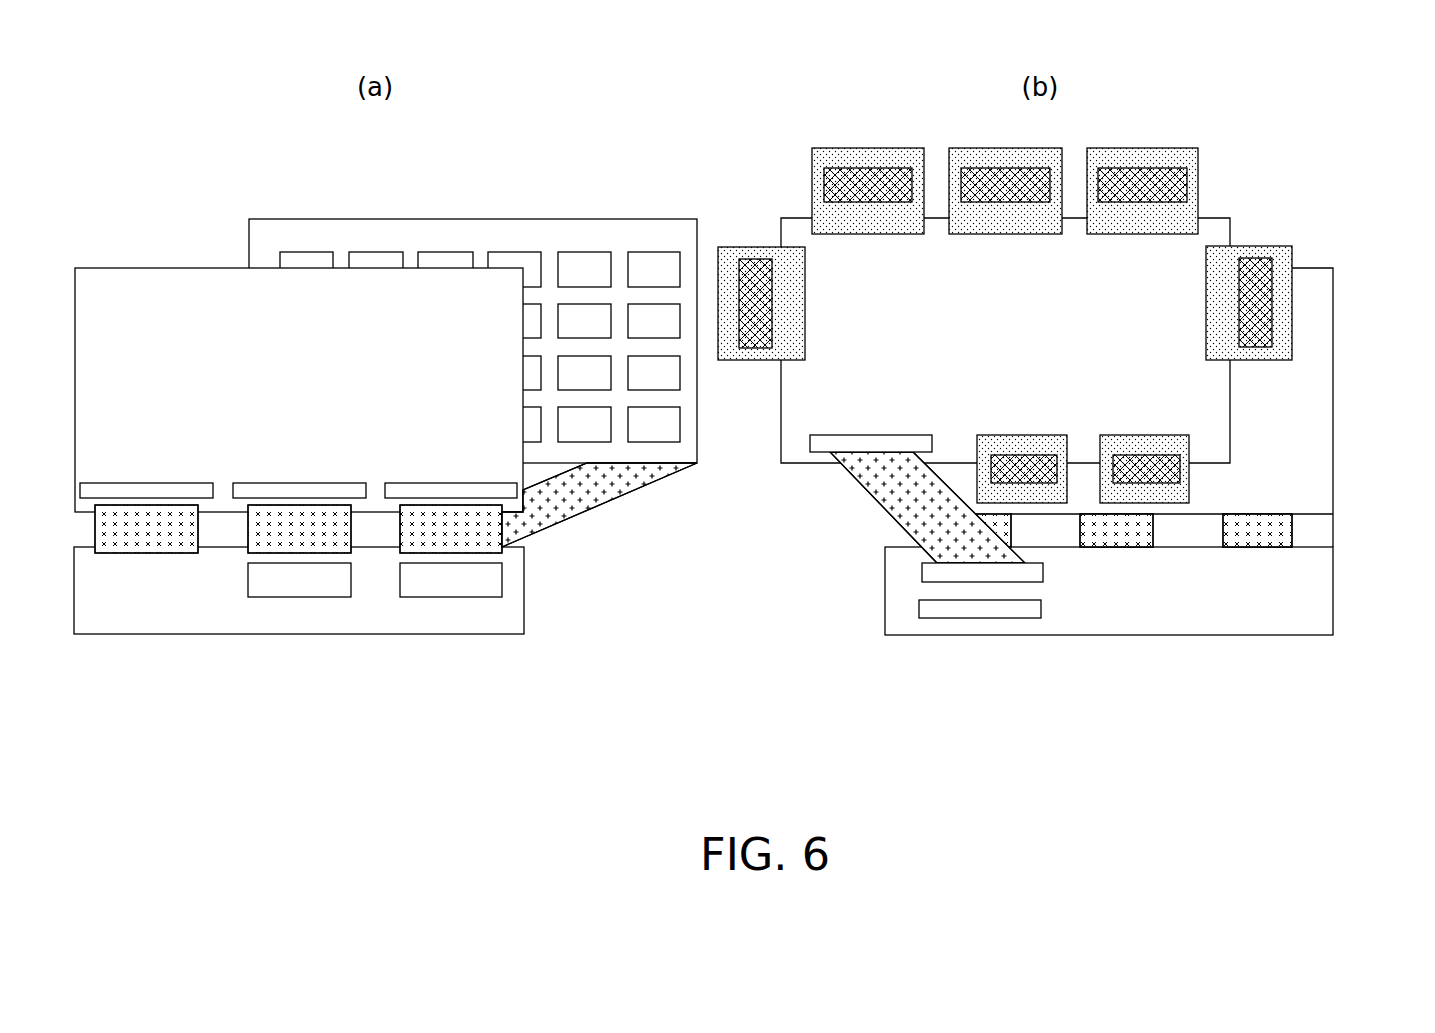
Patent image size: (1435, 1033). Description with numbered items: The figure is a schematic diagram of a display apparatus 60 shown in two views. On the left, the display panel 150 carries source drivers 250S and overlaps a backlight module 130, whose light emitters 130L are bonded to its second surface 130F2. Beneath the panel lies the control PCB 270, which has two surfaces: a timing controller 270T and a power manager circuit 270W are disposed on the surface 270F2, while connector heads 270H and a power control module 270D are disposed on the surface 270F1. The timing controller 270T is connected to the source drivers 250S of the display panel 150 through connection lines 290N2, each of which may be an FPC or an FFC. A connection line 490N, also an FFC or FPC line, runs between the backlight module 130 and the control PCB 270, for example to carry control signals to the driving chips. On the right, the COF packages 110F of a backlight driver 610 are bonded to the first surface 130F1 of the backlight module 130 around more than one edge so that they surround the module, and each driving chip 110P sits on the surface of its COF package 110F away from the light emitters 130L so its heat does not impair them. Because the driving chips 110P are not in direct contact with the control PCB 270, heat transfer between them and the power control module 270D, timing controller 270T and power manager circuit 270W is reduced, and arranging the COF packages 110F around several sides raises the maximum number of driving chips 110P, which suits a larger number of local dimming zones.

The display apparatus 60 is at (142, 118).
The backlight module 130 is at (630, 152).
The second surface of the backlight module 130F2 is at (658, 227).
The first surface of the backlight module 130F1 is at (797, 227).
The light emitters 130L is at (305, 258).
The display panel 150 is at (132, 273).
The source drivers 250S is at (147, 490).
The control PCB 270 is at (843, 721).
The surface of the control PCB 270F2 is at (513, 608).
The surface of the control PCB 270F1 is at (897, 610).
The timing controller 270T is at (266, 590).
The power manager circuit 270W is at (418, 590).
The power control module 270D is at (933, 610).
The connector heads 270H is at (1000, 575).
The connection lines 290N2 is at (143, 548).
The connection line 490N is at (587, 493).
The backlight driver 610 is at (957, 365).
The driving chip 110P is at (1020, 468).
The COF package 110F is at (1182, 497).